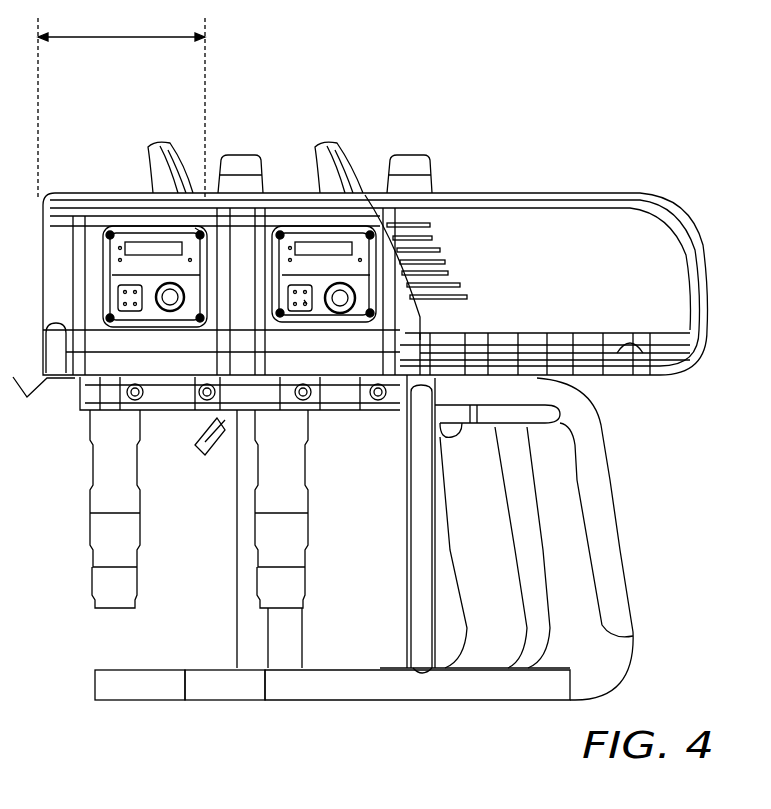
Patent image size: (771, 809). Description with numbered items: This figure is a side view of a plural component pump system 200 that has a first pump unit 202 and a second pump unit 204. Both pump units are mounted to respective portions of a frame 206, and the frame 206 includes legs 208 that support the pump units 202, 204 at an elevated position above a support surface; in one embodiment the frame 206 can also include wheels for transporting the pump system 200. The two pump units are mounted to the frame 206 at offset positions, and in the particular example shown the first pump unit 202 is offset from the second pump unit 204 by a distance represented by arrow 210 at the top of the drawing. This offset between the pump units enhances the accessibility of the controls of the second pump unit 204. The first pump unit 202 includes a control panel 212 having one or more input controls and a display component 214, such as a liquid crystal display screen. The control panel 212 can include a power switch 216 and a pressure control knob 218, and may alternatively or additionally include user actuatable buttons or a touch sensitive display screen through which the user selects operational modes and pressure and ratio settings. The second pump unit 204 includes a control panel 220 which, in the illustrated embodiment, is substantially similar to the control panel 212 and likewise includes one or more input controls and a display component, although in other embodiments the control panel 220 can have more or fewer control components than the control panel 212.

The plural component pump system 200 is at (529, 144).
The first pump unit 202 is at (602, 190).
The second pump unit 204 is at (113, 190).
The frame 206 is at (623, 518).
The legs 208 is at (112, 690).
The arrow 210 is at (120, 37).
The control panel 212 is at (343, 228).
The display component 214 is at (315, 245).
The power switch 216 is at (305, 307).
The pressure control knob 218 is at (350, 300).
The control panel 220 is at (203, 226).